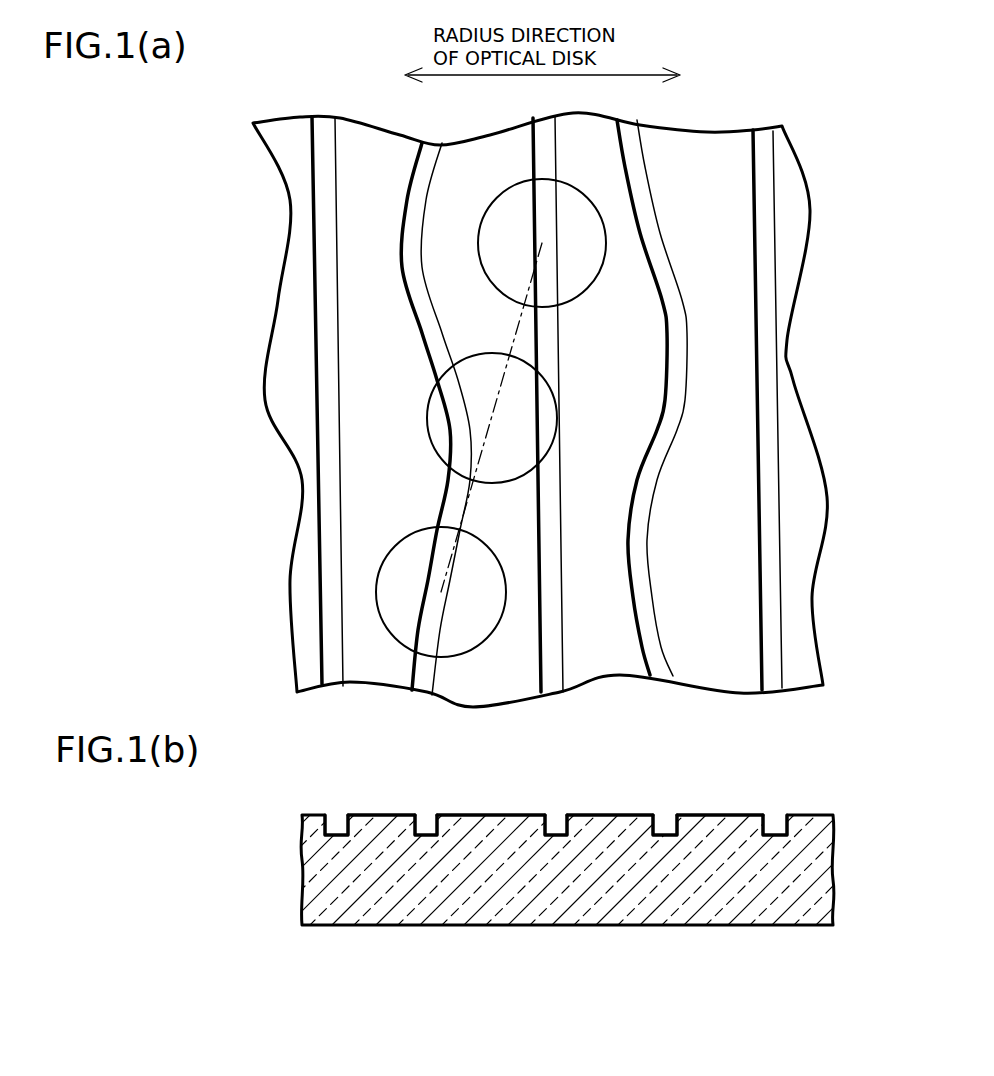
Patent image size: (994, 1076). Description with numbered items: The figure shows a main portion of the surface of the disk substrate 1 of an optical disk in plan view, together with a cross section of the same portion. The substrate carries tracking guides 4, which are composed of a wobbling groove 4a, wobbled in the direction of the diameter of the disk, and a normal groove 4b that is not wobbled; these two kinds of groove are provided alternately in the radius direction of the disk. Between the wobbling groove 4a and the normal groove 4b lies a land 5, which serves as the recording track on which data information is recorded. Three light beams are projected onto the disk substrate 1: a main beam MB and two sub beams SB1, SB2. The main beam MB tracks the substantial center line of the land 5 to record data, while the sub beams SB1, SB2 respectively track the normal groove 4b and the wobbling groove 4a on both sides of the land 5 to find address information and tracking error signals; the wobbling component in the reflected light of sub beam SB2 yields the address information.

In FIG. 1B, the disk substrate 1 is at (836, 840).
In FIG. 1A, the tracking guides 4 is at (840, 230).
In FIG. 1A, the wobbling groove 4a is at (432, 167).
In FIG. 1B, the wobbling groove 4a is at (425, 830).
In FIG. 1A, the normal groove 4b is at (332, 337).
In FIG. 1B, the normal groove 4b is at (334, 830).
In FIG. 1A, the land 5 is at (620, 655).
In FIG. 1B, the land 5 is at (383, 814).
In FIG. 1A, the sub beam SB1 is at (587, 297).
In FIG. 1A, the sub beam SB2 is at (490, 637).
In FIG. 1A, the main beam MB is at (558, 417).